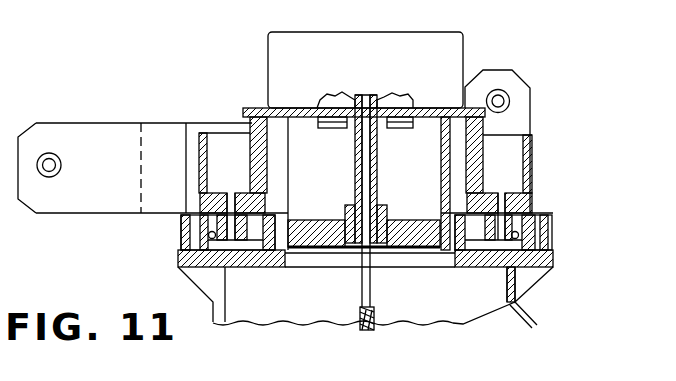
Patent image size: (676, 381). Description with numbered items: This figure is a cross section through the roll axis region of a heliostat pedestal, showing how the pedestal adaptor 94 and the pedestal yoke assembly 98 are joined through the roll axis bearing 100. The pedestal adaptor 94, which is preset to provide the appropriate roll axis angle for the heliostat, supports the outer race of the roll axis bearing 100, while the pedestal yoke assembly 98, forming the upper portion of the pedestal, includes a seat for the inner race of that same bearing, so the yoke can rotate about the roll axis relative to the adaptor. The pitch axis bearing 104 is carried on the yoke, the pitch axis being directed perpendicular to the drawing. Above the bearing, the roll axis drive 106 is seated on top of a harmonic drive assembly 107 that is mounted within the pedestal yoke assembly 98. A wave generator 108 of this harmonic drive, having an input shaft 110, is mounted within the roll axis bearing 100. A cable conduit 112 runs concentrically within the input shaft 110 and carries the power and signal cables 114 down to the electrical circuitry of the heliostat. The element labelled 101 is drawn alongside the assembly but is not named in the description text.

The pedestal adaptor 94 is at (553, 260).
The pedestal yoke assembly 98 is at (553, 195).
The roll axis bearing 100 is at (553, 230).
The arm 101 is at (168, 112).
The pitch axis bearing 104 is at (510, 101).
The roll axis drive 106 is at (384, 33).
The harmonic drive assembly 107 is at (320, 215).
The wave generator 108 is at (410, 250).
The input shaft 110 is at (347, 95).
The cable conduit 112 is at (373, 290).
The power and signal cables 114 is at (362, 328).